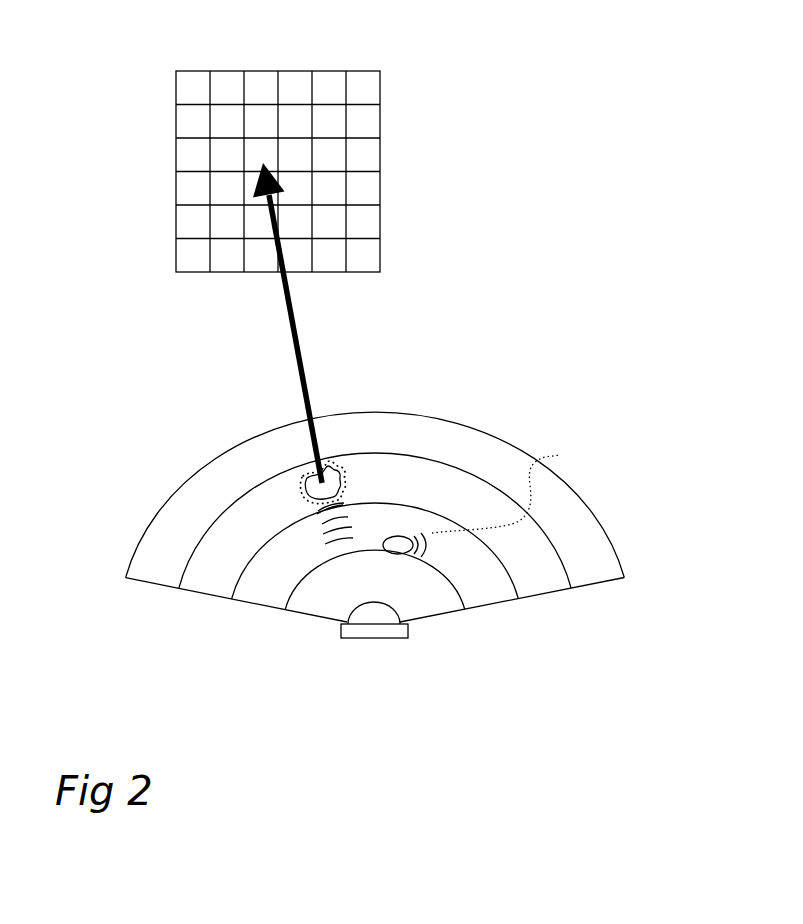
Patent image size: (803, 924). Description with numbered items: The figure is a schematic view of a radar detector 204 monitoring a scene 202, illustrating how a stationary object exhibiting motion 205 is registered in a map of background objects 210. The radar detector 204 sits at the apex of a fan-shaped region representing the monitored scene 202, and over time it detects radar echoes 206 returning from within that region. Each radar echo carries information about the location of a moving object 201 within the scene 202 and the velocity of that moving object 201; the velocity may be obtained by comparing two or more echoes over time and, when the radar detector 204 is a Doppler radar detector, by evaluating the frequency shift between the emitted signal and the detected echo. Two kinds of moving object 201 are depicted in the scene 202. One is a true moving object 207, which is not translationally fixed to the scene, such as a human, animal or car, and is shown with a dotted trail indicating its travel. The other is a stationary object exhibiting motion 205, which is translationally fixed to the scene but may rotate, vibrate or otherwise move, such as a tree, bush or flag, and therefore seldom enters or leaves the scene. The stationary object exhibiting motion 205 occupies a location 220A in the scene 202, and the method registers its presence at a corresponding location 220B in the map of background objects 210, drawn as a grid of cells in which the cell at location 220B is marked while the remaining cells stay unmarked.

The map of background objects 210 is at (381, 117).
The location in the map 220B is at (272, 148).
The location of the stationary object exhibiting motion 220A is at (296, 476).
The moving object 201 is at (432, 450).
The stationary object exhibiting motion 205 is at (345, 486).
The true moving object 207 is at (405, 532).
The scene 202 is at (630, 528).
The radar detector 204 is at (377, 638).
The radar echoes 206 is at (309, 541).